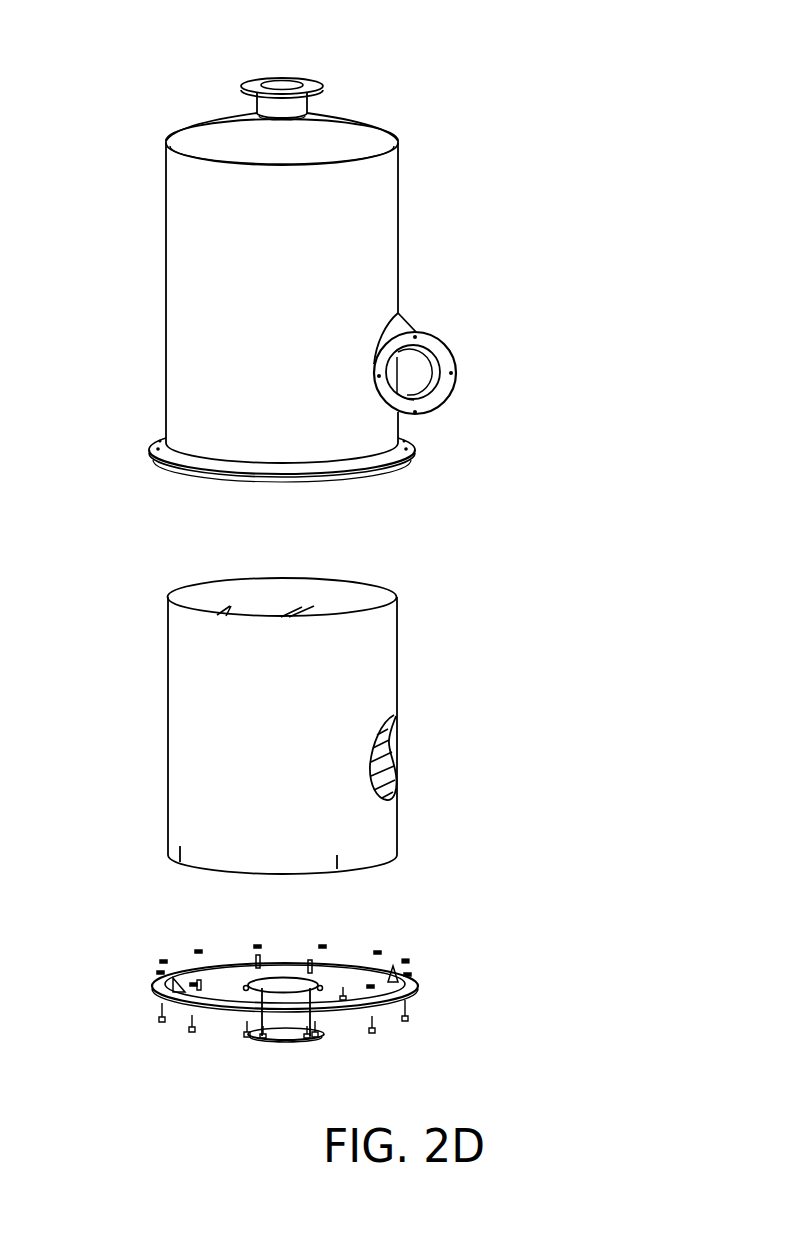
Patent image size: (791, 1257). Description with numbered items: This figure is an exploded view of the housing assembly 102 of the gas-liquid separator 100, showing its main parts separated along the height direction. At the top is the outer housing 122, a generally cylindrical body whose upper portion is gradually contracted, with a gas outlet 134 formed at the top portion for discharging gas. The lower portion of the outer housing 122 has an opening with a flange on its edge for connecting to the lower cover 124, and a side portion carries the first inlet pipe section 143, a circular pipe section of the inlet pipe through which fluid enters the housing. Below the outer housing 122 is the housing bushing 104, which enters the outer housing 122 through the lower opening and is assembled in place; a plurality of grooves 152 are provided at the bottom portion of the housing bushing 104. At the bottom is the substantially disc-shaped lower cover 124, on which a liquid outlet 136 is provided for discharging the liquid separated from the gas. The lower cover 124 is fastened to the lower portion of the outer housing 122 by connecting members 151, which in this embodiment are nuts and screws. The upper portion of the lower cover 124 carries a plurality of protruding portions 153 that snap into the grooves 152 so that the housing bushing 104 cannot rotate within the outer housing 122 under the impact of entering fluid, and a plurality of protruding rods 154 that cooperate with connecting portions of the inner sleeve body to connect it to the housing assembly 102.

The gas-liquid separator 100 is at (630, 83).
The housing assembly 102 is at (413, 157).
The housing bushing 104 is at (395, 637).
The outer housing 122 is at (393, 258).
The lower cover 124 is at (416, 985).
The gas outlet 134 is at (283, 82).
The liquid outlet 136 is at (292, 1040).
The first inlet pipe section 143 is at (457, 362).
The connecting member 151 is at (406, 962).
The grooves 152 is at (179, 860).
The protruding portions 153 is at (258, 964).
The protruding rods 154 is at (311, 963).